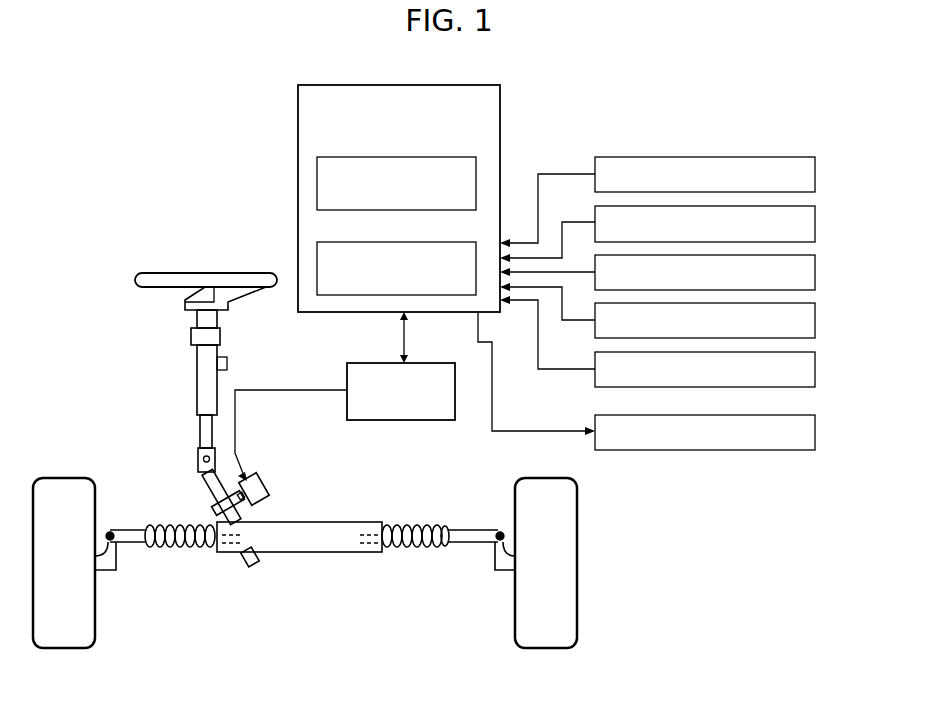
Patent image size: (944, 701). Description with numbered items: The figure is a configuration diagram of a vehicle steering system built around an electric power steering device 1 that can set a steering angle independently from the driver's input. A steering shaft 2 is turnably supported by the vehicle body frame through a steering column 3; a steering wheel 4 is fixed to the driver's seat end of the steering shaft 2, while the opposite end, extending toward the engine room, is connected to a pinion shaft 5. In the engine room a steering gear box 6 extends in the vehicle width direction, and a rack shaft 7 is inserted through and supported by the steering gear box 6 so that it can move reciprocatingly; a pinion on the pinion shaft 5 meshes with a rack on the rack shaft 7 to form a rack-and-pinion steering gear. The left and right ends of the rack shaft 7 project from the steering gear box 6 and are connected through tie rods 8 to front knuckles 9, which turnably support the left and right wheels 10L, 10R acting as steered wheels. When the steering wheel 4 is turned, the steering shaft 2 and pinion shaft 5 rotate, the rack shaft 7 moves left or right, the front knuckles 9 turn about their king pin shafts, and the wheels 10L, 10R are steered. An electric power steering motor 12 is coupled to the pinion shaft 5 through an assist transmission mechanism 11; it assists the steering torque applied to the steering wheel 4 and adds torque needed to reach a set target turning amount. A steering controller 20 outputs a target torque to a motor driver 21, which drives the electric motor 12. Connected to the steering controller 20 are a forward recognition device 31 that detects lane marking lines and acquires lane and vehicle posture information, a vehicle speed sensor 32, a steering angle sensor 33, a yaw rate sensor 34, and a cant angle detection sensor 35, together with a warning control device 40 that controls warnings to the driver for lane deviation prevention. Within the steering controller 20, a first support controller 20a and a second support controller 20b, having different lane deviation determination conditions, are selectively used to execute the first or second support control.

The electric power steering device 1 is at (113, 406).
The steering shaft 2 is at (200, 434).
The steering column 3 is at (197, 376).
The steering wheel 4 is at (208, 273).
The pinion shaft 5 is at (213, 489).
The steering gear box 6 is at (318, 552).
The rack shaft 7 is at (358, 522).
The tie rods 8 is at (134, 543).
The front knuckles 9 is at (110, 571).
The right wheel 10R is at (63, 650).
The left wheel 10L is at (545, 650).
The assist transmission mechanism 11 is at (214, 508).
The electric power steering motor 12 is at (263, 489).
The steering controller 20 is at (298, 120).
The first support controller 20a is at (427, 158).
The second support controller 20b is at (427, 243).
The motor driver 21 is at (432, 362).
The forward recognition device 31 is at (815, 175).
The vehicle speed sensor 32 is at (815, 224).
The steering angle sensor 33 is at (815, 273).
The yaw rate sensor 34 is at (815, 321).
The cant angle detection sensor 35 is at (815, 370).
The warning control device 40 is at (815, 433).